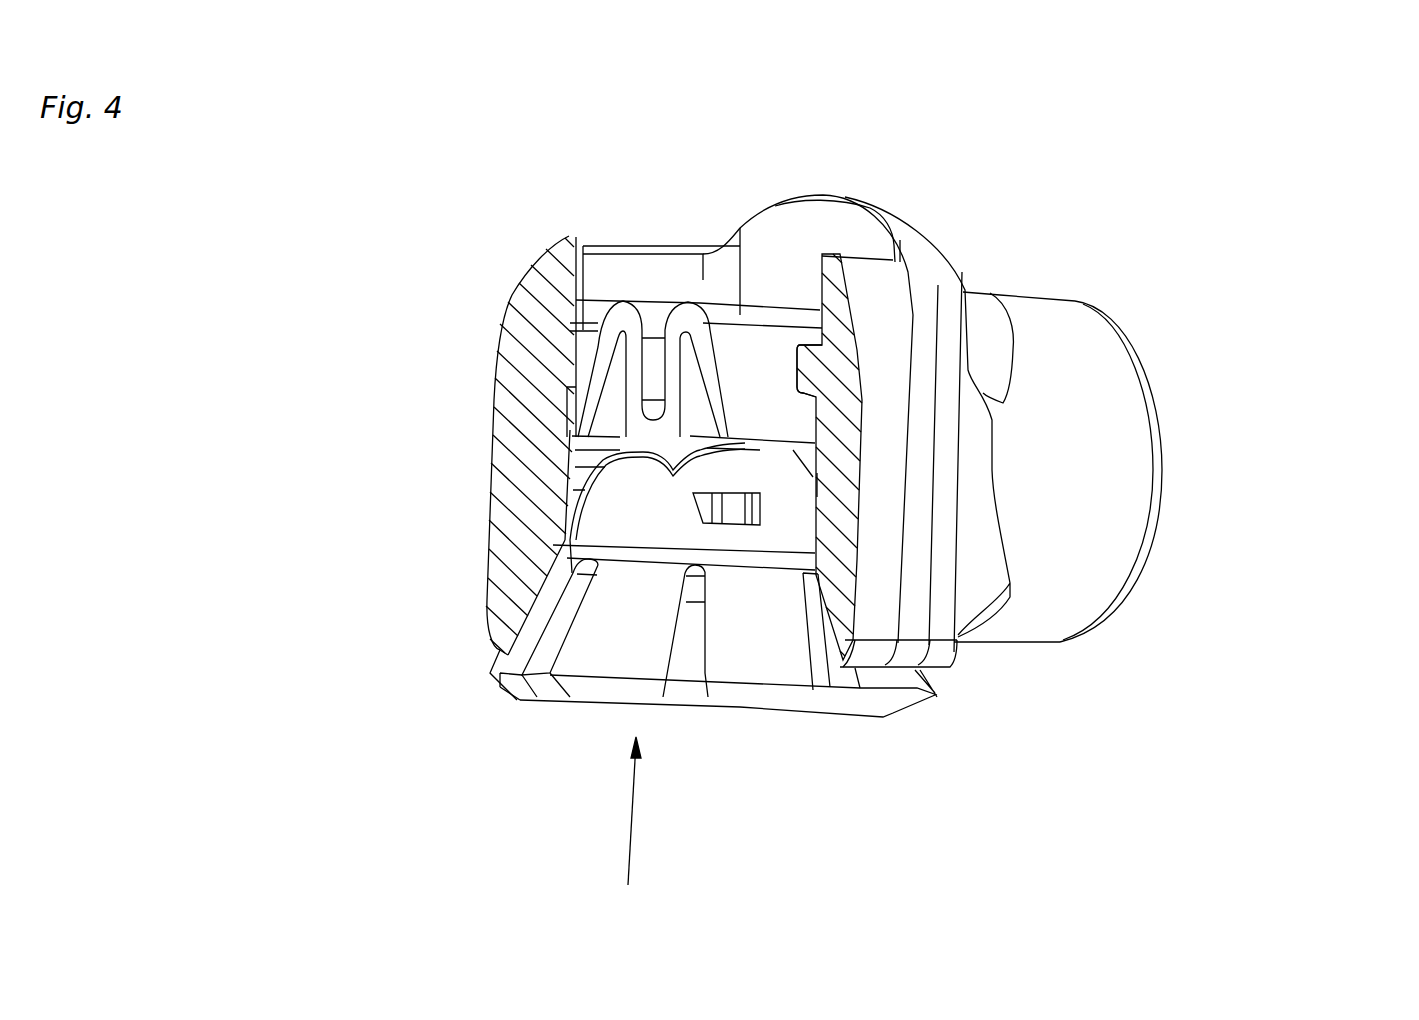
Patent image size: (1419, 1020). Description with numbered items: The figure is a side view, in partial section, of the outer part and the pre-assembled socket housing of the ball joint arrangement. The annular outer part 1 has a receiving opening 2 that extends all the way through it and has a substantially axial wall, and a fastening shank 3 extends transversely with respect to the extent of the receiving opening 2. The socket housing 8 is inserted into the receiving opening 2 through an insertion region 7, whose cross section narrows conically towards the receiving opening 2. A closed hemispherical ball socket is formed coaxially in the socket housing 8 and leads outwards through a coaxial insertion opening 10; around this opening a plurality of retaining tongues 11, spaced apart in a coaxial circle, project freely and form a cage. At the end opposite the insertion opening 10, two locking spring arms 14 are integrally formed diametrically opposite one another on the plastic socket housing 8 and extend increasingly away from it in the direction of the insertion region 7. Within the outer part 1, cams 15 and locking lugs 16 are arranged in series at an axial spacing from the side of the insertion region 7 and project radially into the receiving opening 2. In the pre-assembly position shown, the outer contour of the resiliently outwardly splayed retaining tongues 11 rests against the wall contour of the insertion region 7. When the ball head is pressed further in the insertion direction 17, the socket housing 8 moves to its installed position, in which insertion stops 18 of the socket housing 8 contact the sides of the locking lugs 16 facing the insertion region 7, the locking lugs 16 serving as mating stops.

The outer part 1 is at (512, 388).
The receiving opening 2 is at (560, 491).
The fastening shank 3 is at (1117, 504).
The insertion region 7 is at (540, 617).
The socket housing 8 is at (553, 547).
The insertion opening 10 is at (692, 633).
The retaining tongues 11 is at (597, 662).
The locking spring arms 14 is at (602, 353).
The cams 15 is at (572, 438).
The locking lugs 16 is at (578, 357).
The insertion direction 17 is at (630, 857).
The insertion stops 18 is at (727, 512).